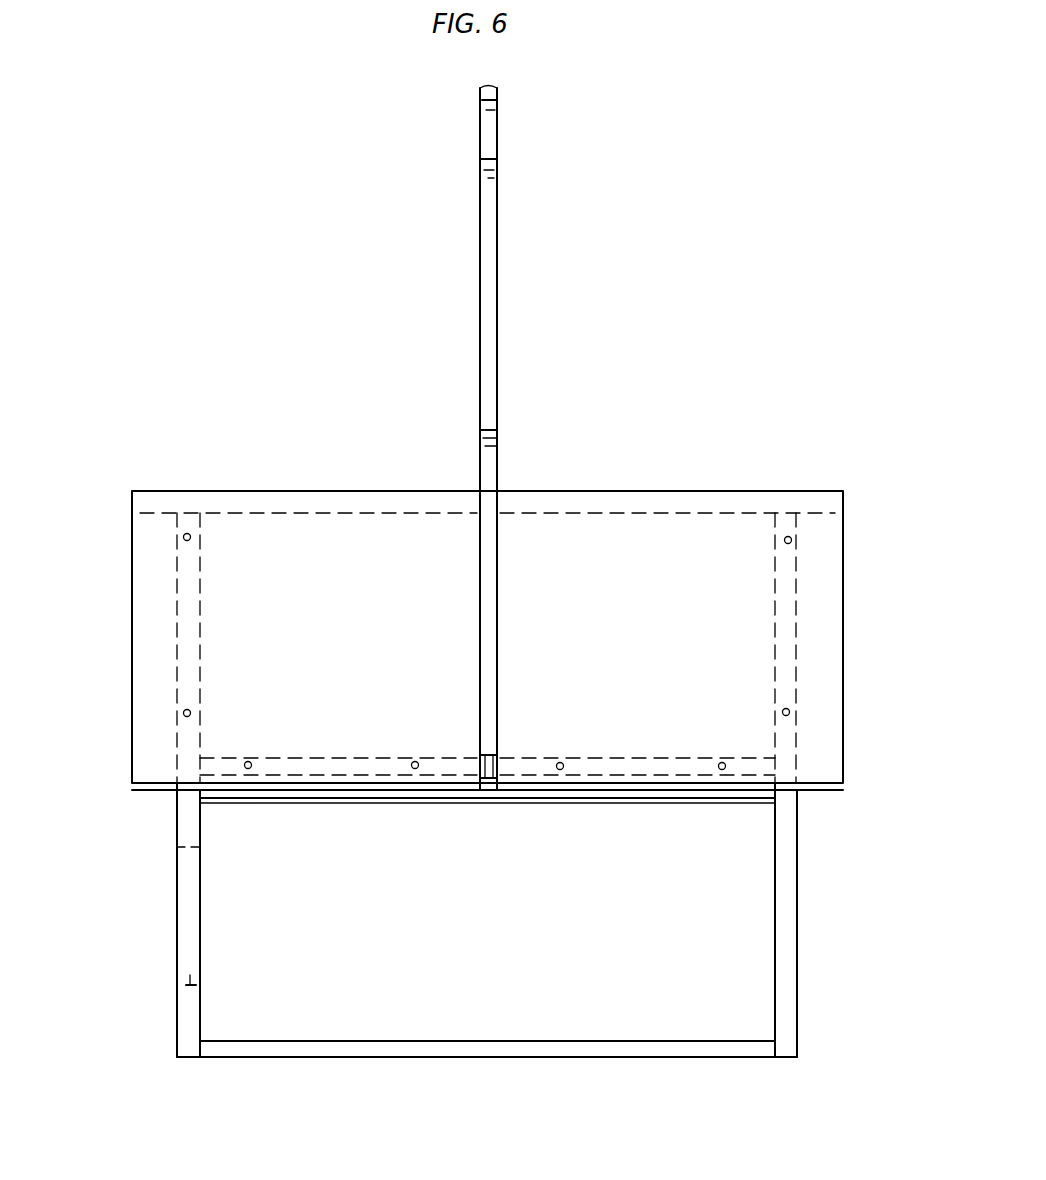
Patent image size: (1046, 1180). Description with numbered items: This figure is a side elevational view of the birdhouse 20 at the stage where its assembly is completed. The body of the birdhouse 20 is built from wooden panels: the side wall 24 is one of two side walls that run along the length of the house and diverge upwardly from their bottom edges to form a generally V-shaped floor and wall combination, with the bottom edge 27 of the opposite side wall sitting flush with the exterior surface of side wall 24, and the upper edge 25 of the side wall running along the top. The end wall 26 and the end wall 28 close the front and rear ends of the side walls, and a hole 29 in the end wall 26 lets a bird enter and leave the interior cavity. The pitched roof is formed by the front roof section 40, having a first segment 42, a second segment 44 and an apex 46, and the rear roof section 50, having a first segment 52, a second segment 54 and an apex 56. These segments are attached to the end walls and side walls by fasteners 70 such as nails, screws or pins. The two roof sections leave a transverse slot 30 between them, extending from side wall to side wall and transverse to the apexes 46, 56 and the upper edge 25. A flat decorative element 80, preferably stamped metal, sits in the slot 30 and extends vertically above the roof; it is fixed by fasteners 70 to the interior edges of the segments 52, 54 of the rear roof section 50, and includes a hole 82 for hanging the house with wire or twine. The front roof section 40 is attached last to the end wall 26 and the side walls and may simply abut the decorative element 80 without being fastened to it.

The birdhouse 20 is at (823, 478).
The side wall 24 is at (710, 957).
The upper edge 25 is at (668, 807).
The end wall 26 is at (180, 1027).
The bottom edge 27 is at (653, 1050).
The end wall 28 is at (780, 900).
The hole 29 is at (190, 980).
The transverse slot 30 is at (497, 548).
The front roof section 40 is at (280, 482).
The first segment 42 is at (404, 513).
The second segment 44 is at (248, 553).
The apex 46 is at (352, 491).
The rear roof section 50 is at (687, 485).
The first segment 52 is at (606, 513).
The second segment 54 is at (712, 548).
The apex 56 is at (798, 491).
The fasteners 70 is at (185, 540).
The decorative element 80 is at (488, 248).
The hole 82 is at (492, 108).